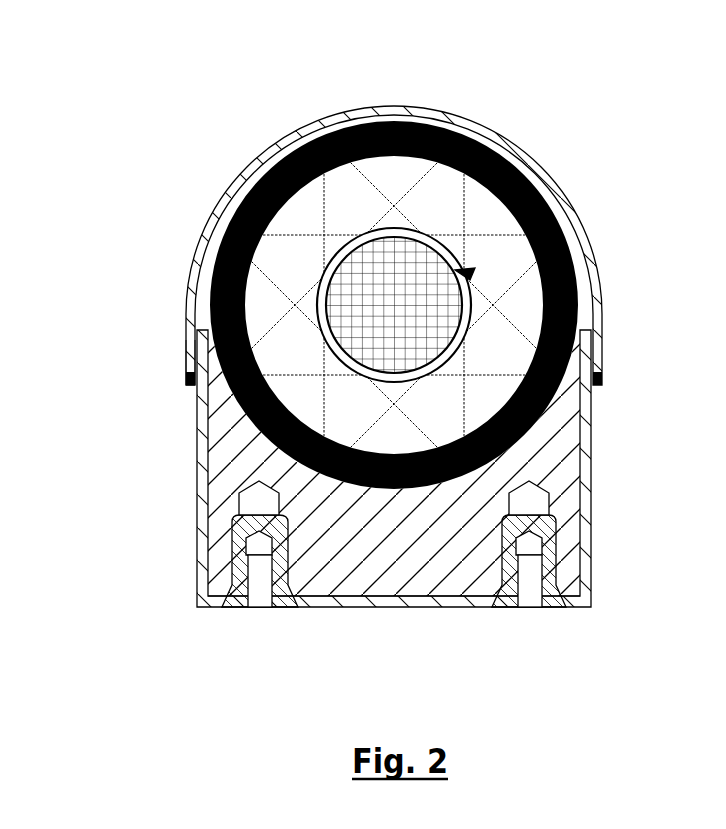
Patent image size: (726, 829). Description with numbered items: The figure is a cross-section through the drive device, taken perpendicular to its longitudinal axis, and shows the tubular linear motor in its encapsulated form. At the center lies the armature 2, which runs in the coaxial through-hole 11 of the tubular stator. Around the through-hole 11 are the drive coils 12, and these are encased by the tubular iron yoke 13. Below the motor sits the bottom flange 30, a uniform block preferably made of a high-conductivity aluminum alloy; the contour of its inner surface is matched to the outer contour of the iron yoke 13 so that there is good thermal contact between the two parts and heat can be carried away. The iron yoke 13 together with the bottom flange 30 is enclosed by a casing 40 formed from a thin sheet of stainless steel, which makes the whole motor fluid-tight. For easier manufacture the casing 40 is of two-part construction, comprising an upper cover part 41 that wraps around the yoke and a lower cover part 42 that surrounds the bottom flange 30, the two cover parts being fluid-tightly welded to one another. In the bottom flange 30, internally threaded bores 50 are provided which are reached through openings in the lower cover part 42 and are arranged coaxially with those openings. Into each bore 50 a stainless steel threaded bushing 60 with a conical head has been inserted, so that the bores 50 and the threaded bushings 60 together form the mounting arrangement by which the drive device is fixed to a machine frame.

The armature 2 is at (472, 274).
The coaxial through-hole 11 is at (427, 233).
The drive coils 12 is at (387, 168).
The iron yoke 13 is at (265, 152).
The bottom flange 30 is at (392, 567).
The casing 40 is at (184, 381).
The upper cover part 41 is at (191, 262).
The lower cover part 42 is at (355, 601).
The bores 50 is at (250, 502).
The threaded bushing 60 is at (262, 608).